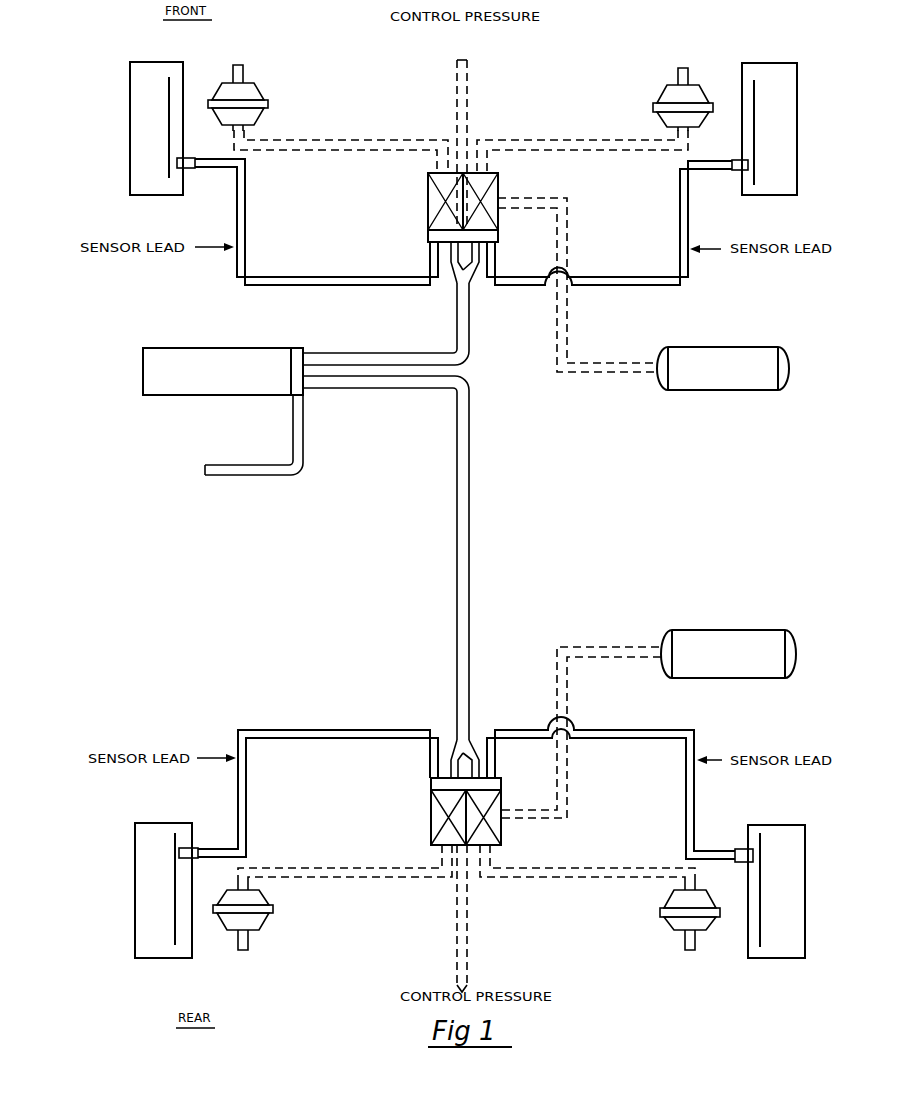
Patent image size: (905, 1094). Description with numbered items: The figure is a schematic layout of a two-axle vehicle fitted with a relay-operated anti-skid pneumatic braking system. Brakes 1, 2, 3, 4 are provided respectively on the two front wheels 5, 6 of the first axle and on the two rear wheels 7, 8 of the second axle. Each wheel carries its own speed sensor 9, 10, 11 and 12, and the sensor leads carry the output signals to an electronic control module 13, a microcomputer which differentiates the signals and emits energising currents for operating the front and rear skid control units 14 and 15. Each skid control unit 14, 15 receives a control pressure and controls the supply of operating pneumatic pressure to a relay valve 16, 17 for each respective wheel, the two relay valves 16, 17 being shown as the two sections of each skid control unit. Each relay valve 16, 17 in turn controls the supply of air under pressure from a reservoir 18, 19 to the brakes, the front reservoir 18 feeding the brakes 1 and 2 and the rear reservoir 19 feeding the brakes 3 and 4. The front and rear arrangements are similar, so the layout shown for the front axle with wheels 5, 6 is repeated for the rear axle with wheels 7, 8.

The brake 1 is at (250, 92).
The brake 2 is at (673, 97).
The brake 3 is at (257, 925).
The brake 4 is at (680, 922).
The front wheel 5 is at (152, 148).
The front wheel 6 is at (767, 88).
The rear wheel 7 is at (157, 860).
The rear wheel 8 is at (775, 850).
The speed sensor 9 is at (190, 163).
The speed sensor 10 is at (738, 170).
The speed sensor 11 is at (196, 850).
The speed sensor 12 is at (740, 849).
The electronic control module 13 is at (203, 348).
The front skid control unit 14 is at (430, 207).
The rear skid control unit 15 is at (432, 812).
The relay valve 16 is at (442, 185).
The relay valve 17 is at (486, 186).
The reservoir 18 is at (715, 391).
The reservoir 19 is at (713, 630).